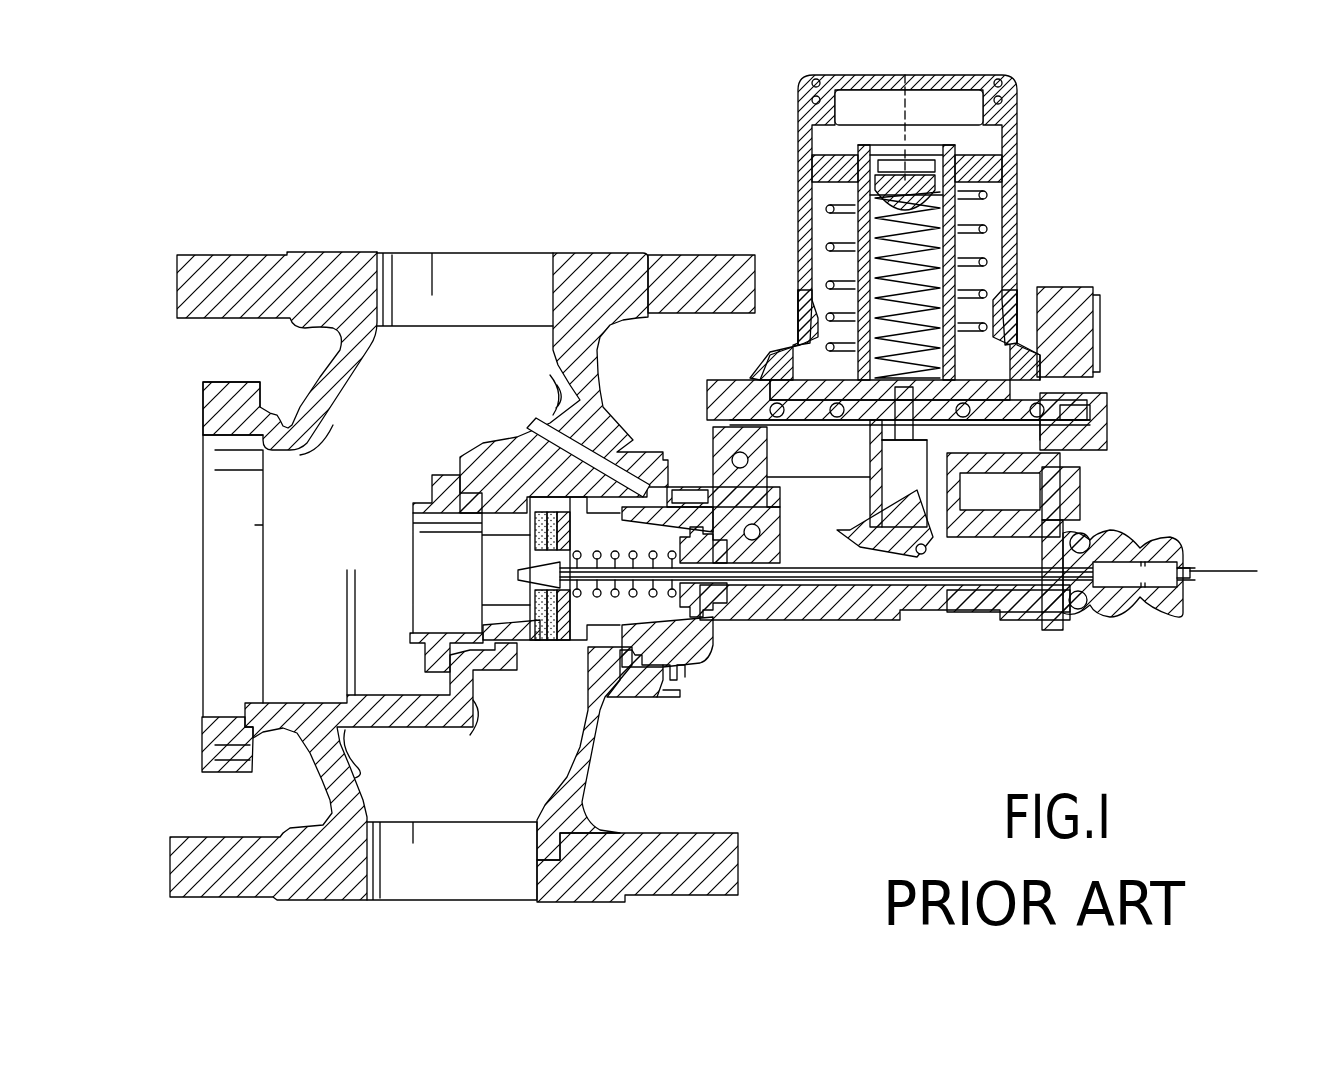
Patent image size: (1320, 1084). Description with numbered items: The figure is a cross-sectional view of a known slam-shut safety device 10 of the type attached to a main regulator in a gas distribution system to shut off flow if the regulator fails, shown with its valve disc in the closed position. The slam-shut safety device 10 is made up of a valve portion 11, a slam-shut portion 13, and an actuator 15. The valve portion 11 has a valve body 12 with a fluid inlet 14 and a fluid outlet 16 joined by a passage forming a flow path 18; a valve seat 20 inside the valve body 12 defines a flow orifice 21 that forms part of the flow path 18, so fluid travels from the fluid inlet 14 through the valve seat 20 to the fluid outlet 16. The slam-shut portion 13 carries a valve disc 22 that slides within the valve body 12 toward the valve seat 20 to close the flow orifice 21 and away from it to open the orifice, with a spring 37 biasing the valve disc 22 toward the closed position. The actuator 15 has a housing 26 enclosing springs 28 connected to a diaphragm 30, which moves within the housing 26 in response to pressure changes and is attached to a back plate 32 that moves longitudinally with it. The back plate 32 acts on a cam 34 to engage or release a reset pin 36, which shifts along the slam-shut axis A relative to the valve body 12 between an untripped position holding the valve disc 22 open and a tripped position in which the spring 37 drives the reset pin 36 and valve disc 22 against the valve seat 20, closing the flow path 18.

The slam-shut safety device 10 is at (495, 203).
The valve portion 11 is at (713, 798).
The valve body 12 is at (593, 752).
The slam-shut portion 13 is at (896, 661).
The fluid inlet 14 is at (423, 885).
The actuator 15 is at (1080, 192).
The fluid outlet 16 is at (410, 268).
The flow path 18 is at (347, 507).
The valve seat 20 is at (520, 497).
The flow orifice 21 is at (557, 612).
The valve disc 22 is at (570, 608).
The housing 26 is at (1017, 163).
The springs 28 is at (973, 262).
The diaphragm 30 is at (1107, 430).
The back plate 32 is at (857, 453).
The cam 34 is at (1040, 513).
The reset pin 36 is at (1043, 395).
The spring 37 is at (640, 553).
The slam-shut axis A is at (1230, 570).